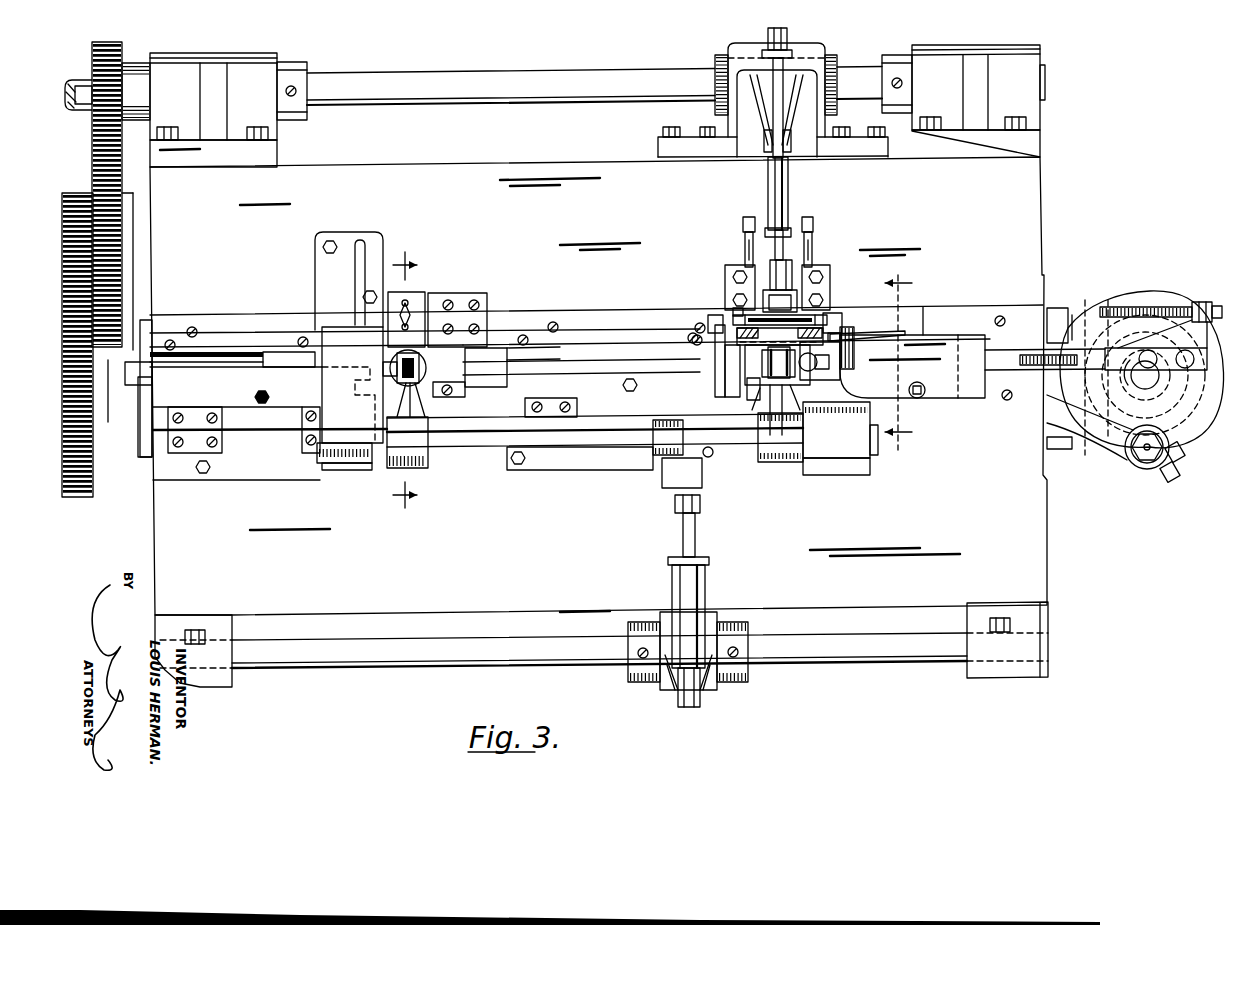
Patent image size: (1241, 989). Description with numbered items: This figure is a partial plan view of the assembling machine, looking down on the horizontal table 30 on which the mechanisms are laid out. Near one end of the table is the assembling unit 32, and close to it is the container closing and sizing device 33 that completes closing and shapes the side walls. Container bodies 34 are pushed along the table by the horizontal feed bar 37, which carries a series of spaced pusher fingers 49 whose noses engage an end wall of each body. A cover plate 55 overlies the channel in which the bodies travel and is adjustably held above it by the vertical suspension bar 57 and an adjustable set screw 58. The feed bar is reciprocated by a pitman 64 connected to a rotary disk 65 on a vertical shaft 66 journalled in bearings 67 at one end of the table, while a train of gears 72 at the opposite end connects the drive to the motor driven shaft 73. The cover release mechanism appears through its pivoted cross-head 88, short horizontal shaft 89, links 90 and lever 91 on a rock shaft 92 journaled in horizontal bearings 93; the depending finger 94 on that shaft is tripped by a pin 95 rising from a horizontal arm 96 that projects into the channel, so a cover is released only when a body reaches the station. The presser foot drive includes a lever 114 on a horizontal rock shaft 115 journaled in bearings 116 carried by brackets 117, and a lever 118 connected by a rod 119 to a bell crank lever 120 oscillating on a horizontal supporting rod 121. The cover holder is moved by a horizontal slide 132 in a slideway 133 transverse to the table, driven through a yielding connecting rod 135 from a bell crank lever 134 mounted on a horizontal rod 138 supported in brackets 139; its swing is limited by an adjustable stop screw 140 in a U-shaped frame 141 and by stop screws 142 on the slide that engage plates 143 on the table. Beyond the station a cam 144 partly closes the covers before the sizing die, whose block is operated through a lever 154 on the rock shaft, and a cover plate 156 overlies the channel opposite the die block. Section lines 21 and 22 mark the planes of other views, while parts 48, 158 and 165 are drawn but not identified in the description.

The section line 21 is at (909, 362).
The section line 22 is at (418, 380).
The horizontal table 30 is at (875, 532).
The assembling unit 32 is at (834, 300).
The container closing and sizing device 33 is at (334, 360).
The container bodies 34 is at (490, 380).
The horizontal feed bar 37 is at (136, 370).
The adjusting screw 48 is at (1130, 308).
The pusher fingers 49 is at (1040, 353).
The cover plate 55 is at (920, 380).
The vertical suspension bar 57 is at (842, 364).
The adjustable set screw 58 is at (920, 400).
The pitman 64 is at (1112, 445).
The rotary disk 65 is at (1192, 440).
The vertical shaft 66 is at (1141, 374).
The bearings 67 is at (1056, 312).
The train of gears 72 is at (85, 335).
The motor driven shaft 73 is at (82, 110).
The pivoted cross-head 88 is at (768, 356).
The short horizontal shaft 89 is at (768, 391).
The links 90 is at (720, 388).
The lever 91 is at (715, 360).
The rock shaft 92 is at (724, 318).
The horizontal bearings 93 is at (748, 310).
The depending finger 94 is at (836, 315).
The pin 95 is at (838, 336).
The horizontal arm 96 is at (860, 340).
The lever 114 is at (785, 450).
The horizontal rock shaft 115 is at (588, 435).
The bearings 116 is at (358, 458).
The brackets 117 is at (332, 304).
The lever 118 is at (668, 480).
The rod 119 is at (688, 584).
The bell crank lever 120 is at (708, 695).
The horizontal supporting rod 121 is at (516, 655).
The horizontal slide 132 is at (796, 275).
The slideway 133 is at (800, 176).
The bell crank lever 134 is at (768, 133).
The yielding connecting rod 135 is at (790, 200).
The horizontal rod 138 is at (543, 82).
The brackets 139 is at (255, 68).
The adjustable stop screw 140 is at (790, 68).
The U-shaped frame 141 is at (750, 47).
The adjustable stop screws 142 is at (745, 236).
The plates 143 is at (728, 282).
The cam 144 is at (460, 375).
The lever 154 is at (418, 448).
The cover plate 156 is at (410, 302).
The slide 158 is at (615, 382).
The plate 165 is at (216, 395).